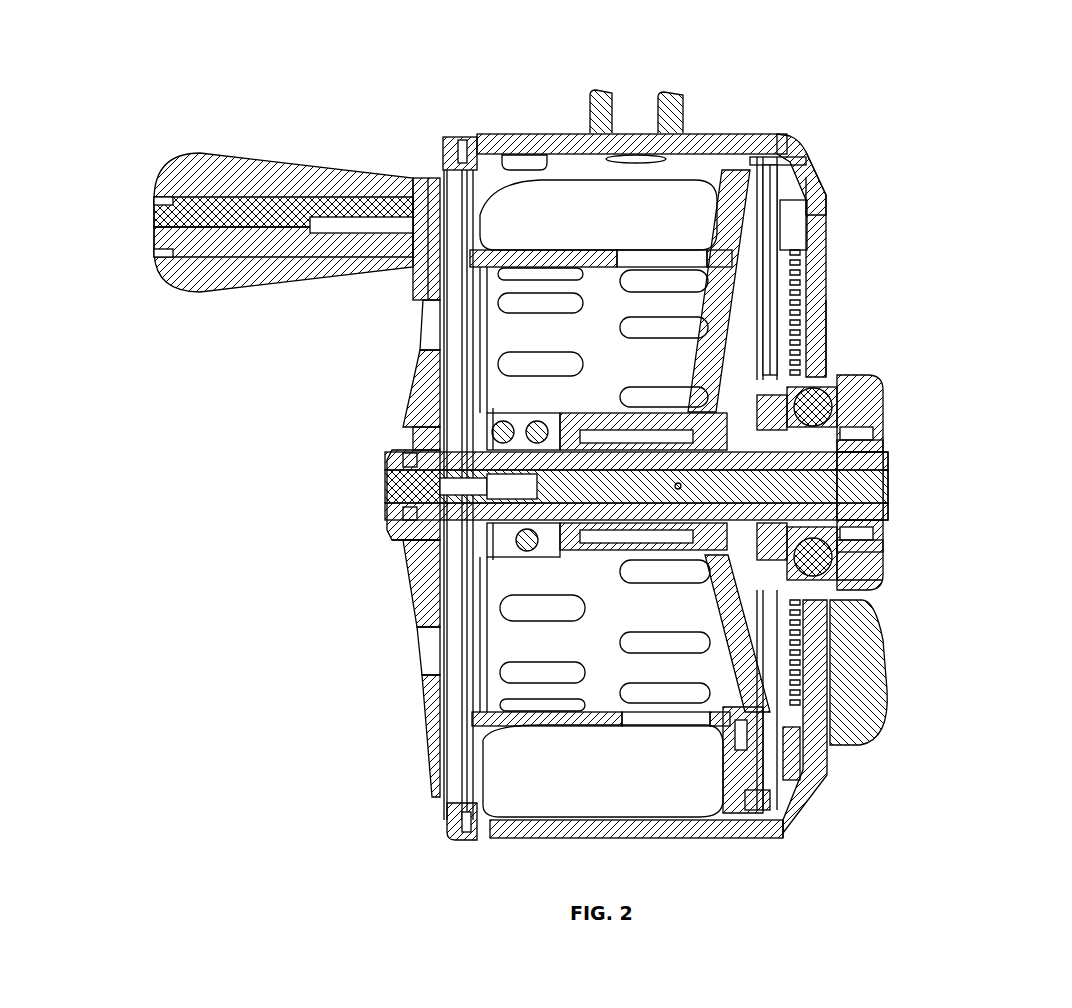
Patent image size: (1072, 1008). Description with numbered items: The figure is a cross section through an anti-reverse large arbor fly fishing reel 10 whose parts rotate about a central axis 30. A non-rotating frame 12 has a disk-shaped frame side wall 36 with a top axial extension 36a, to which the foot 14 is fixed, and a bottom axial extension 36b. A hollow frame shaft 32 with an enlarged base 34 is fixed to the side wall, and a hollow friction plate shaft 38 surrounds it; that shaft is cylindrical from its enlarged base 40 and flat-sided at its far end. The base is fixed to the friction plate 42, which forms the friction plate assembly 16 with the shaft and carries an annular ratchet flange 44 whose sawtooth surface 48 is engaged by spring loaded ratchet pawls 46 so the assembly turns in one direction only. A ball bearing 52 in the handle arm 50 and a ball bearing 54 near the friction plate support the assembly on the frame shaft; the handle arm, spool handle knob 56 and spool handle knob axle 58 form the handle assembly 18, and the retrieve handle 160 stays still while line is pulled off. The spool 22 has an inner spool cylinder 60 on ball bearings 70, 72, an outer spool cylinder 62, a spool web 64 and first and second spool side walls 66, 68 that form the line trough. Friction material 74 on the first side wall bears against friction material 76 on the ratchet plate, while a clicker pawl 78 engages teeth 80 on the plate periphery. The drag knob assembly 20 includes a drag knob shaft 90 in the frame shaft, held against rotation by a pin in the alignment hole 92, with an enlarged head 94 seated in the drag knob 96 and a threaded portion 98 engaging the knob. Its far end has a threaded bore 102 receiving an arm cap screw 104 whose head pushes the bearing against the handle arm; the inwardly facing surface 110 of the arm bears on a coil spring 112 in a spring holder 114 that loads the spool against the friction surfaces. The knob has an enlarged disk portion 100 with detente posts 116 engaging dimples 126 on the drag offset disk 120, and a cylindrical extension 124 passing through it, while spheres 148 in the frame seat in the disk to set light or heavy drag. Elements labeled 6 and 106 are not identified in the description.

The frame side plate 6 is at (418, 328).
The anti-reverse large arbor fly fishing reel 10 is at (888, 797).
The frame 12 is at (826, 228).
The foot 14 is at (670, 93).
The friction plate assembly 16 is at (792, 167).
The handle assembly 18 is at (410, 383).
The drag knob assembly 20 is at (860, 398).
The spool 22 is at (528, 730).
The central axis 30 is at (390, 487).
The hollow frame shaft 32 is at (400, 543).
The enlarged base 34 is at (815, 390).
The frame side wall 36 is at (830, 345).
The top axial extension 36a is at (562, 132).
The bottom axial extension 36b is at (545, 838).
The friction plate shaft 38 is at (604, 560).
The enlarged base 40 is at (730, 407).
The friction plate 42 is at (790, 285).
The annular ratchet flange 44 is at (820, 178).
The spring loaded ratchet pawls 46 is at (800, 258).
The sawtooth surface 48 is at (800, 785).
The handle arm 50 is at (405, 560).
The ball bearing 52 is at (410, 428).
The ball bearing 54 is at (735, 568).
The spool handle knob 56 is at (250, 290).
The spool handle knob axle 58 is at (155, 222).
The inner spool cylinder 60 is at (608, 408).
The outer spool cylinder 62 is at (563, 247).
The spool web 64 is at (735, 302).
The first spool side wall 66 is at (717, 203).
The second spool side wall 68 is at (473, 222).
The ball bearing 70 is at (570, 437).
The ball bearing 72 is at (710, 550).
The annular body of friction material 74 is at (717, 167).
The second annular body of friction material 76 is at (745, 167).
The clicker pawl 78 is at (740, 795).
The teeth 80 is at (765, 812).
The drag knob shaft 90 is at (870, 455).
The alignment hole 92 is at (562, 555).
The enlarged head 94 is at (888, 497).
The drag knob 96 is at (870, 570).
The threaded portion 98 is at (883, 532).
The enlarged disk portion 100 is at (888, 518).
The threaded bore 102 is at (403, 456).
The arm cap screw 104 is at (395, 512).
The seal 106 is at (400, 530).
The inwardly facing surface 110 is at (418, 590).
The coil spring 112 is at (488, 578).
The spring holder 114 is at (493, 408).
The spring-loaded detente posts 116 is at (858, 432).
The drag offset disk 120 is at (785, 410).
The cylindrical extension 124 is at (865, 578).
The dimples 126 is at (848, 542).
The spheres 148 is at (857, 590).
The retrieve handle 160 is at (245, 152).